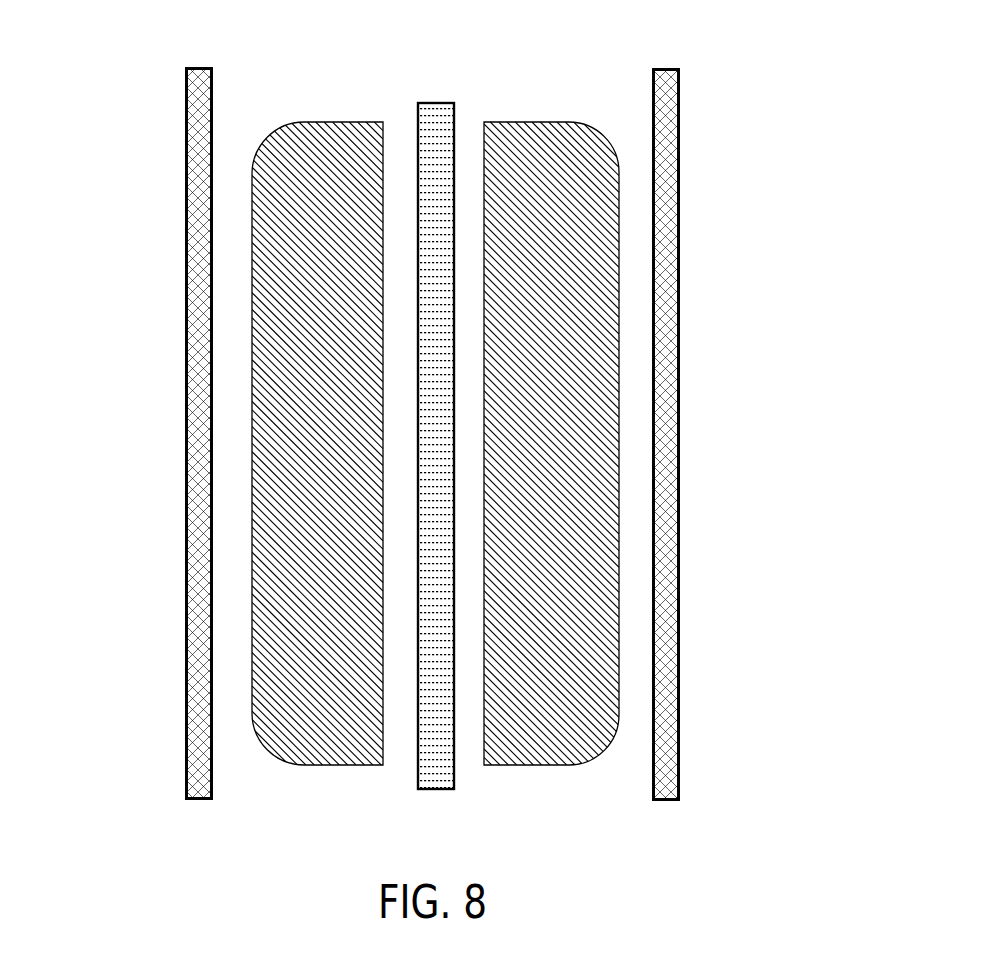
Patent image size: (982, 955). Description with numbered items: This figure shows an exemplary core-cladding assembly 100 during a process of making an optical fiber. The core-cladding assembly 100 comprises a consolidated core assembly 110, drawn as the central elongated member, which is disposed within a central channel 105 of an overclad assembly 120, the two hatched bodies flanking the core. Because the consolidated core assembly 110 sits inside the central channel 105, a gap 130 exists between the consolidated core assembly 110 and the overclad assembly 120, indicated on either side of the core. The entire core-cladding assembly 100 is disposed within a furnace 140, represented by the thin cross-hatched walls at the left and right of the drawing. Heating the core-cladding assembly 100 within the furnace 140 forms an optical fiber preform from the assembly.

The core-cladding assembly 100 is at (308, 99).
The central channel 105 is at (465, 759).
The consolidated core assembly 110 is at (437, 113).
The overclad assembly 120 is at (588, 332).
The gap 130 is at (400, 494).
The furnace 140 is at (195, 603).